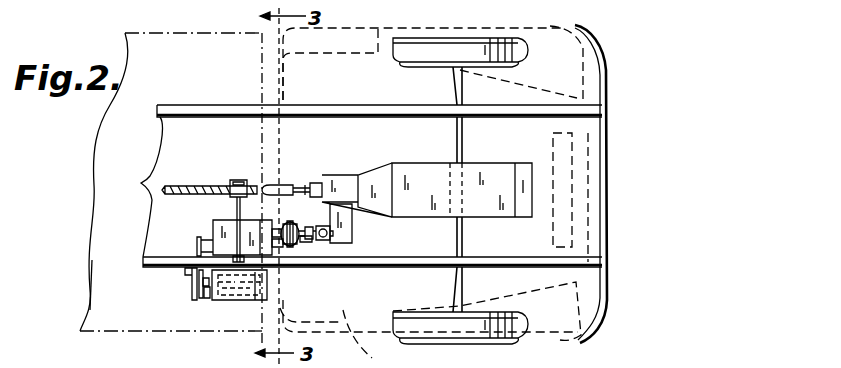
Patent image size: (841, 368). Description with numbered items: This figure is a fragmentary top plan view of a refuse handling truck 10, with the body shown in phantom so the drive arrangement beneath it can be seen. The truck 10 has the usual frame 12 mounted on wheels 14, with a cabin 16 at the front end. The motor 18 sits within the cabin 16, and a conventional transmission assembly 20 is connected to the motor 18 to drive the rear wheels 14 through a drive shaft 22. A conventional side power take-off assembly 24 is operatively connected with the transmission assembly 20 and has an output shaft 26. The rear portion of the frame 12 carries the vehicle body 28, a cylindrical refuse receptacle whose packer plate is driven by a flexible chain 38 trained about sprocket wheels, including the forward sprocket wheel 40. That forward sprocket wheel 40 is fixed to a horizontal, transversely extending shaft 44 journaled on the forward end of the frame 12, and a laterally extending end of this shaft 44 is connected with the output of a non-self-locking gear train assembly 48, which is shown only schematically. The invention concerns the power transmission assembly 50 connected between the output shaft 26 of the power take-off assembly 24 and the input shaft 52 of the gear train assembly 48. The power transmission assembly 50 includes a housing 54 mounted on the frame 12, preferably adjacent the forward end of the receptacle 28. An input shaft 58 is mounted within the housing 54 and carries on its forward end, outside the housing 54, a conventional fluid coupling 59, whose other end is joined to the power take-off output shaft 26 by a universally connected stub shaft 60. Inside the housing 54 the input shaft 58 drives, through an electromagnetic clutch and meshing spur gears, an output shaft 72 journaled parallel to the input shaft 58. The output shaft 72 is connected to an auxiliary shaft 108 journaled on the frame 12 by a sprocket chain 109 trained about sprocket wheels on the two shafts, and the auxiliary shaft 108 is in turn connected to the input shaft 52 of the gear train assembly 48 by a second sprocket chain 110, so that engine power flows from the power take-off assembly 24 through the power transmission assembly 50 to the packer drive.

The refuse handling truck 10 is at (616, 118).
The frame 12 is at (141, 183).
The wheels 14 is at (455, 45).
The cabin 16 is at (375, 339).
The motor 18 is at (430, 168).
The transmission assembly 20 is at (348, 178).
The drive shaft 22 is at (277, 183).
The side power take-off assembly 24 is at (352, 224).
The output shaft 26 is at (323, 228).
The vehicle body 28 is at (97, 287).
The flexible chain 38 is at (206, 185).
The forward sprocket wheel 40 is at (243, 178).
The shaft 44 is at (236, 216).
The gear train assembly 48 is at (268, 285).
The power transmission assembly 50 is at (283, 244).
The input shaft 52 is at (207, 300).
The housing 54 is at (212, 236).
The input shaft 58 is at (276, 228).
The fluid coupling 59 is at (296, 212).
The universally connected stub shaft 60 is at (307, 241).
The output shaft 72 is at (204, 245).
The auxiliary shaft 108 is at (196, 290).
The sprocket chain 109 is at (190, 274).
The second sprocket chain 110 is at (202, 298).